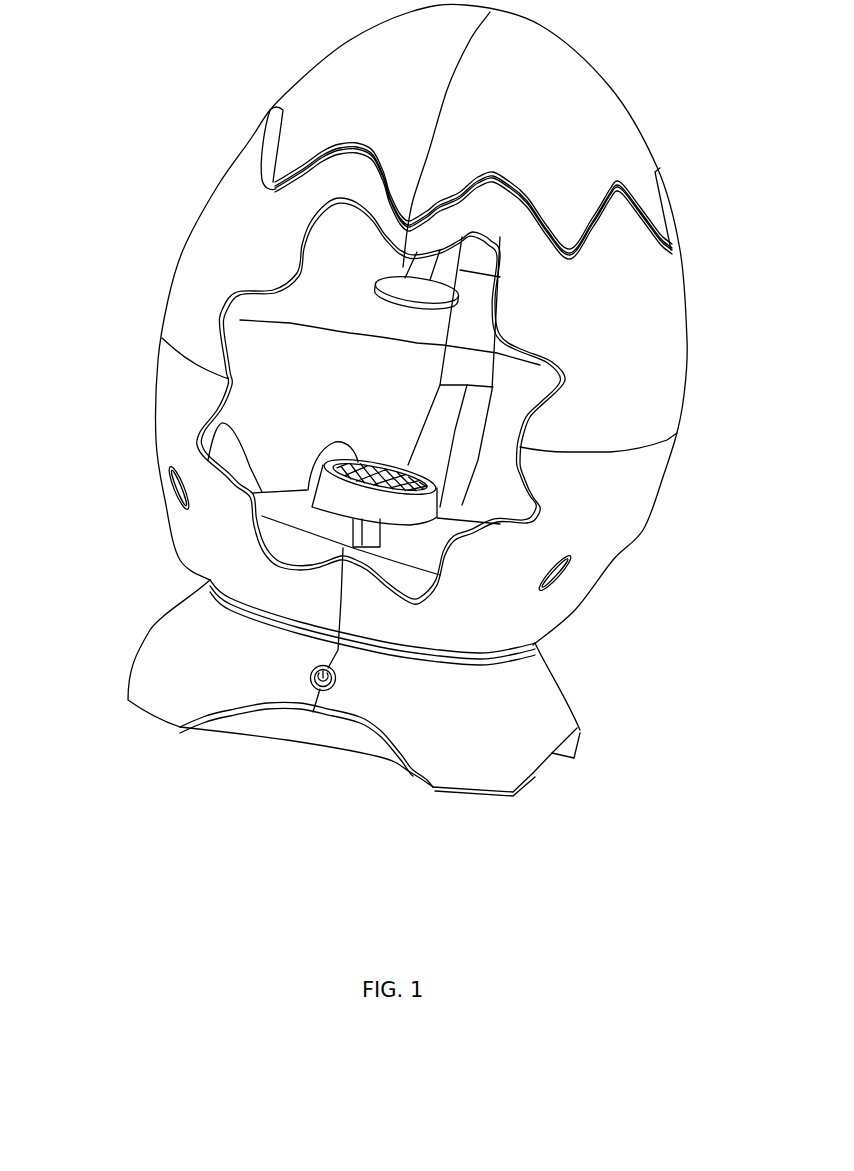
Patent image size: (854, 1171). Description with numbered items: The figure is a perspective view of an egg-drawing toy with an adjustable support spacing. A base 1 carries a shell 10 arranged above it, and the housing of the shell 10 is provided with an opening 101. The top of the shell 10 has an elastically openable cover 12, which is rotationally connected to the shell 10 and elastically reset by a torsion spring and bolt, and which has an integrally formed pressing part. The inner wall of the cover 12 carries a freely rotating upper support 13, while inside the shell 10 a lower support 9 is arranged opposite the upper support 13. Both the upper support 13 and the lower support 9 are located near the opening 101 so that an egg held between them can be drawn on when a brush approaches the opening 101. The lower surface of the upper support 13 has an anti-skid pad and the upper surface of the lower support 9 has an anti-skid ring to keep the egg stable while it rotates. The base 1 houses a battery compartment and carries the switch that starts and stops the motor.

The base 1 is at (185, 690).
The lower support 9 is at (340, 497).
The shell 10 is at (173, 403).
The cover 12 is at (533, 125).
The upper support 13 is at (417, 287).
The opening 101 is at (272, 360).